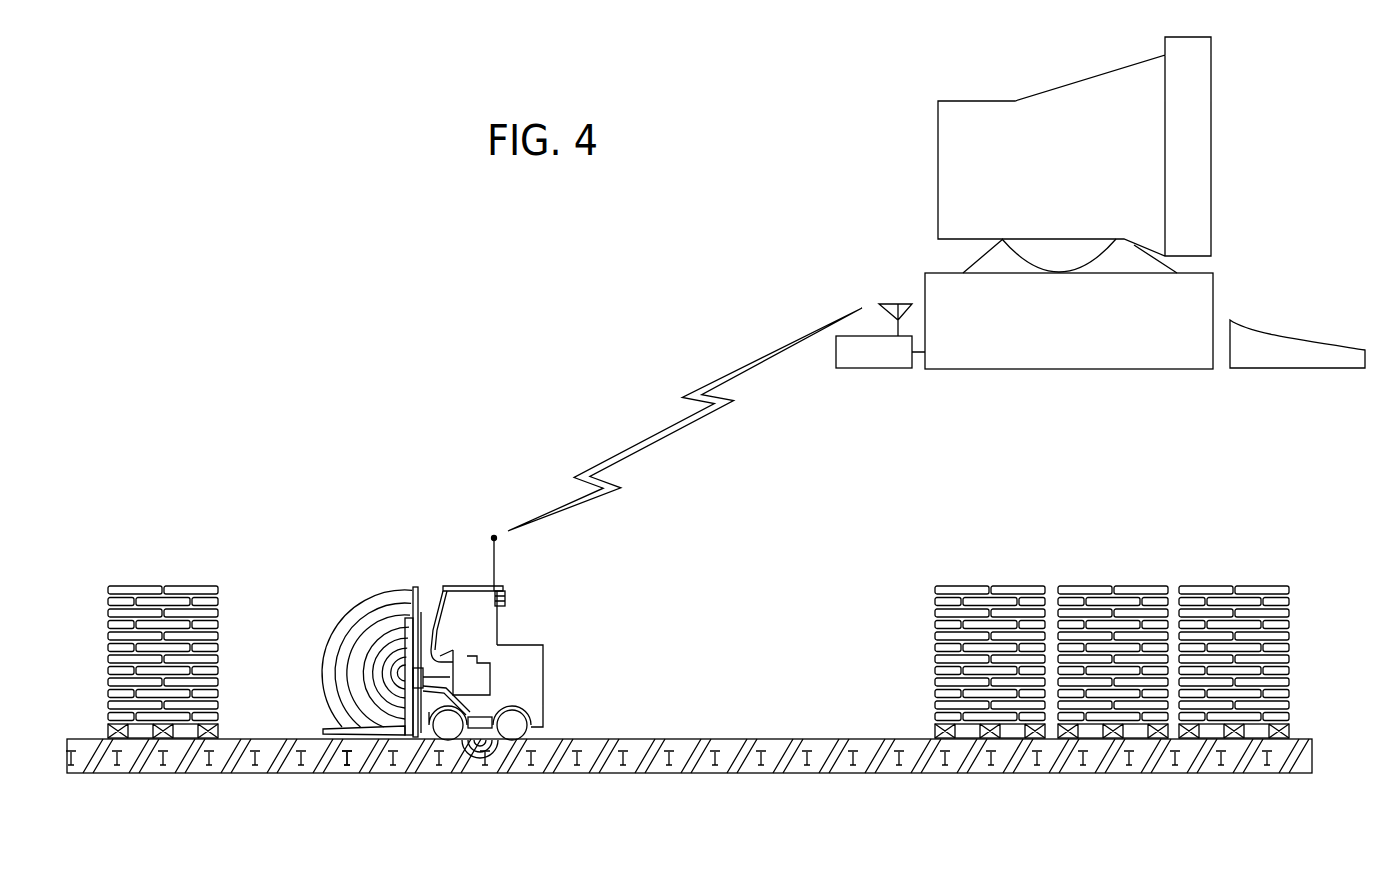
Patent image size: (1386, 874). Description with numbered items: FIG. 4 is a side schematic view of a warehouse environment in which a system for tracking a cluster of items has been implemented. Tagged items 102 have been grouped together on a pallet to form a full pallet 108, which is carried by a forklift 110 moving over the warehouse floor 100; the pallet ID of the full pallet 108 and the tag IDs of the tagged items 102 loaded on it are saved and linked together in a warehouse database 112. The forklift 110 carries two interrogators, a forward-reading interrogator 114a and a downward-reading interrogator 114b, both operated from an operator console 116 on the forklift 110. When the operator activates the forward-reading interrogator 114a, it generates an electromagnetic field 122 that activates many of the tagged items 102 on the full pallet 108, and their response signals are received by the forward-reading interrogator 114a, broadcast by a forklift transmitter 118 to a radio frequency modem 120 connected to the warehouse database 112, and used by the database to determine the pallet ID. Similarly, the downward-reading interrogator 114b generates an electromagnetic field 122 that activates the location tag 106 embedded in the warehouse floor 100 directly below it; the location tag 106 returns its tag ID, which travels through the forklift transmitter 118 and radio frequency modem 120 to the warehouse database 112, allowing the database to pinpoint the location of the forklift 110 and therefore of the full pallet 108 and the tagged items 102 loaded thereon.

The warehouse floor 100 is at (1308, 740).
The tagged items 102 is at (138, 630).
The location tags 106 is at (372, 773).
The full pallet 108 is at (217, 625).
The forklift 110 is at (543, 694).
The warehouse database 112 is at (938, 141).
The forward-reading interrogator 114a is at (423, 682).
The downward-reading interrogator 114b is at (512, 752).
The operator console 116 is at (442, 630).
The forklift transmitter 118 is at (494, 562).
The radio frequency modem 120 is at (898, 368).
The electromagnetic field 122 is at (322, 690).